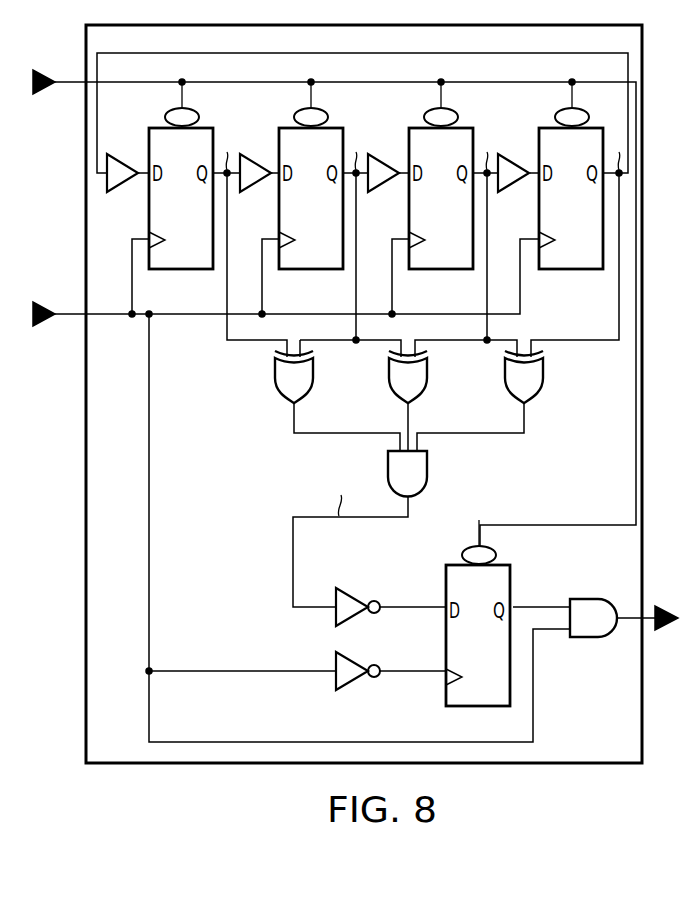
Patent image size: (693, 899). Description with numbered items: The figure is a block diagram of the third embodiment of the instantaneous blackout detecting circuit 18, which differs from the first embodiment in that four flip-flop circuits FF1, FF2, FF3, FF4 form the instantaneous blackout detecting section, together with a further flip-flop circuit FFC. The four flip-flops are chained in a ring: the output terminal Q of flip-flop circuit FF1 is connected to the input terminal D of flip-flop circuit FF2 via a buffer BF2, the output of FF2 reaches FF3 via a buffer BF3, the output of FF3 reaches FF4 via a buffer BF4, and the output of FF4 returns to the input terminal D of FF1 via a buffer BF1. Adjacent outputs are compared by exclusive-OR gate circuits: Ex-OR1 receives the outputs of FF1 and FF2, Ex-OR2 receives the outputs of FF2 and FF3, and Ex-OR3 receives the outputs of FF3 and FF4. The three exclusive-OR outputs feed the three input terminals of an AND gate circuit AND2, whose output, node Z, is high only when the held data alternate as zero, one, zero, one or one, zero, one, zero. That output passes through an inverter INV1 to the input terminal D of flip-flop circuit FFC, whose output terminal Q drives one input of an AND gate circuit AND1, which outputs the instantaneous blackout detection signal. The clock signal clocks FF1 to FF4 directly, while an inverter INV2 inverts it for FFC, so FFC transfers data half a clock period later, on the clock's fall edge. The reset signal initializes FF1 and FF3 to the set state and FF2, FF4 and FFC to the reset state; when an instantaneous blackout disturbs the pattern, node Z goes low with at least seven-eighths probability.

The instantaneous blackout detecting circuit 18 is at (591, 764).
The flip-flop circuit FF1 is at (193, 269).
The flip-flop circuit FF2 is at (322, 269).
The flip-flop circuit FF3 is at (450, 269).
The flip-flop circuit FF4 is at (580, 269).
The flip-flop circuit FFC is at (446, 698).
The buffer BF1 is at (120, 153).
The buffer BF2 is at (253, 153).
The buffer BF3 is at (383, 153).
The buffer BF4 is at (512, 153).
The exclusive-OR gate circuit Ex-OR1 is at (280, 392).
The exclusive-OR gate circuit Ex-OR2 is at (397, 400).
The exclusive-OR gate circuit Ex-OR3 is at (513, 400).
The AND gate circuit AND1 is at (585, 598).
The AND gate circuit AND2 is at (428, 466).
The inverter INV1 is at (373, 584).
The inverter INV2 is at (373, 648).